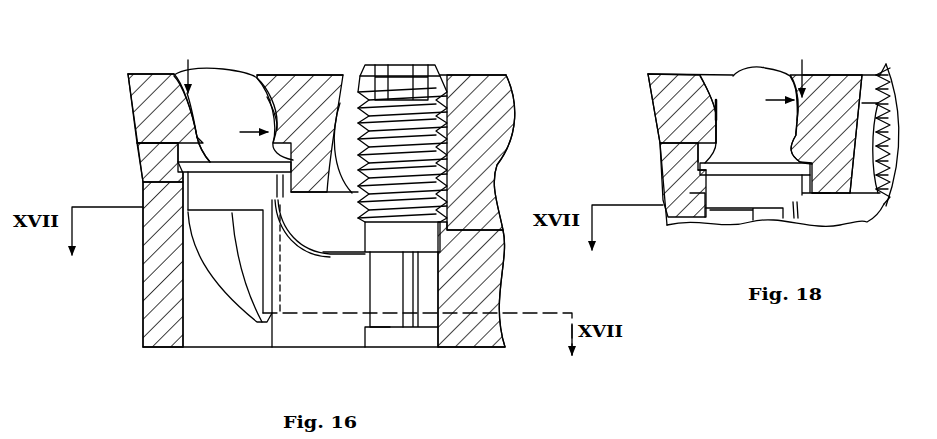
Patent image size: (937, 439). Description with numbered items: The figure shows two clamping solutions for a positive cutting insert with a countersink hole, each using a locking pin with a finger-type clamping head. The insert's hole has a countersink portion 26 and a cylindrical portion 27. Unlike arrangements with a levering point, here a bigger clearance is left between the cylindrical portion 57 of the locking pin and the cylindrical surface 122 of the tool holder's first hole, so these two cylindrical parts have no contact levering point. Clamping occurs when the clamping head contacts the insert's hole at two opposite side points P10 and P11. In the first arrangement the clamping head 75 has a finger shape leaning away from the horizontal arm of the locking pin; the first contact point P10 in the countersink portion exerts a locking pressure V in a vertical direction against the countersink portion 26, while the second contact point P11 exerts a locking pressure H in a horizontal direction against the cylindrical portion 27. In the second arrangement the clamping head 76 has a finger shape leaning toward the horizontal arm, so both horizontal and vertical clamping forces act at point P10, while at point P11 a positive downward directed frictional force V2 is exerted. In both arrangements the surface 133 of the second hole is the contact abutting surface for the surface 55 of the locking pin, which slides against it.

In FIG. 16, the clamping head 75 is at (236, 63).
In FIG. 18, the clamping head 76 is at (757, 65).
In FIG. 16, the countersink portion 26 is at (270, 85).
In FIG. 16, the cylindrical portion 27 is at (199, 135).
In FIG. 16, the cylindrical portion 57 is at (197, 192).
In FIG. 18, the cylindrical portion 57 is at (718, 193).
In FIG. 16, the surface 55 is at (384, 305).
In FIG. 16, the cylindrical surface 122 is at (188, 322).
In FIG. 16, the surface 133 is at (437, 295).
In FIG. 16, the locking pressure V is at (186, 68).
In FIG. 18, the locking pressure V is at (801, 70).
In FIG. 18, the frictional force V2 is at (716, 114).
In FIG. 16, the locking pressure H is at (247, 132).
In FIG. 18, the locking pressure H is at (773, 102).
In FIG. 16, the first locking pin contact point P10 is at (191, 97).
In FIG. 18, the first locking pin contact point P10 is at (799, 98).
In FIG. 16, the second locking pin contact point P11 is at (274, 124).
In FIG. 18, the second locking pin contact point P11 is at (718, 125).